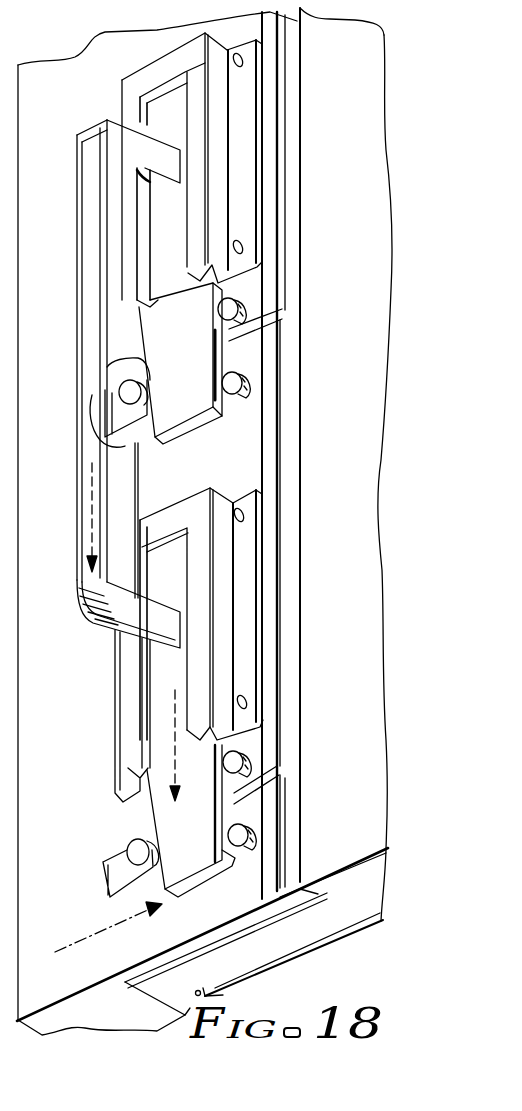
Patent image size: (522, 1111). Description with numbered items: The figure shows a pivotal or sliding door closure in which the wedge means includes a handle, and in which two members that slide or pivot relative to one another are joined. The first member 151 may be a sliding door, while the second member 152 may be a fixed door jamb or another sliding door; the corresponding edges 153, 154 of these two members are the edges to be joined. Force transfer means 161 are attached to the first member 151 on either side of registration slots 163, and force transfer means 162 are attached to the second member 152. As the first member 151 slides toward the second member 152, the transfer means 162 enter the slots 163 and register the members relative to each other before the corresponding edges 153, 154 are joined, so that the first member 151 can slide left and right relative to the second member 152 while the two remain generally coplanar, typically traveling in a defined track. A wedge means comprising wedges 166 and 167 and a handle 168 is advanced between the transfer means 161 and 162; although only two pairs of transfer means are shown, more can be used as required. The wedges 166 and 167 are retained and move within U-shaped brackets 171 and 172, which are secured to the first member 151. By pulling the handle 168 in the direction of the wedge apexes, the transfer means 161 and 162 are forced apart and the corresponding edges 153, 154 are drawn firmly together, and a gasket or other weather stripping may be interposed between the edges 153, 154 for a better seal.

The first member 151 is at (202, 523).
The second member 152 is at (346, 464).
The corresponding edge 153 is at (144, 982).
The corresponding edge 154 is at (200, 997).
The force transfer means 161 is at (222, 312).
The force transfer means 162 is at (110, 385).
The registration slots 163 is at (275, 343).
The wedge 166 is at (180, 363).
The wedge 167 is at (191, 821).
The handle 168 is at (80, 232).
The U-shaped bracket 171 is at (133, 80).
The U-shaped bracket 172 is at (182, 517).